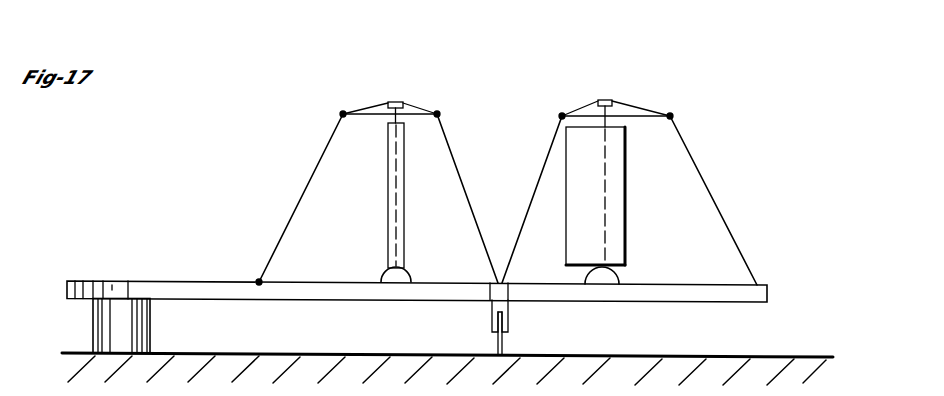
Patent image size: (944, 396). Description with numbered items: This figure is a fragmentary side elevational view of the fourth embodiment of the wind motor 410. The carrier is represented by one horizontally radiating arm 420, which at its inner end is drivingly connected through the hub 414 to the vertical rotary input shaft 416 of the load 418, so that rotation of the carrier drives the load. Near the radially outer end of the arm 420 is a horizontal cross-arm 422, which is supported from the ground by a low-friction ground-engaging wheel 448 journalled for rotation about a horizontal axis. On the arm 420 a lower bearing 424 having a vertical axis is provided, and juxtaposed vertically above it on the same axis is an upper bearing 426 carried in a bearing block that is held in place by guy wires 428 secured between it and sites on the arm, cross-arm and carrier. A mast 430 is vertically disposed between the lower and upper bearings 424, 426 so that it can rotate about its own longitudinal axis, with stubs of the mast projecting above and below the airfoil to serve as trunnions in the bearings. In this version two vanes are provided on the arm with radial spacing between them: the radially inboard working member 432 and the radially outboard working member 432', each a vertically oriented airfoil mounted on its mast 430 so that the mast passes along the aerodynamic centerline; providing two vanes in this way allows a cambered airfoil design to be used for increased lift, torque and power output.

The wind motor 410 is at (245, 156).
The hub 414 is at (122, 281).
The rotary input shaft 416 is at (125, 300).
The load 418 is at (153, 336).
The arm 420 is at (202, 281).
The cross-arm 422 is at (509, 292).
The lower bearing 424 is at (412, 277).
The upper bearing 426 is at (402, 102).
The guy wires 428 is at (454, 155).
The mast 430 is at (397, 121).
The working member 432 is at (419, 195).
The working member 432' is at (621, 196).
The wheels 448 is at (503, 342).